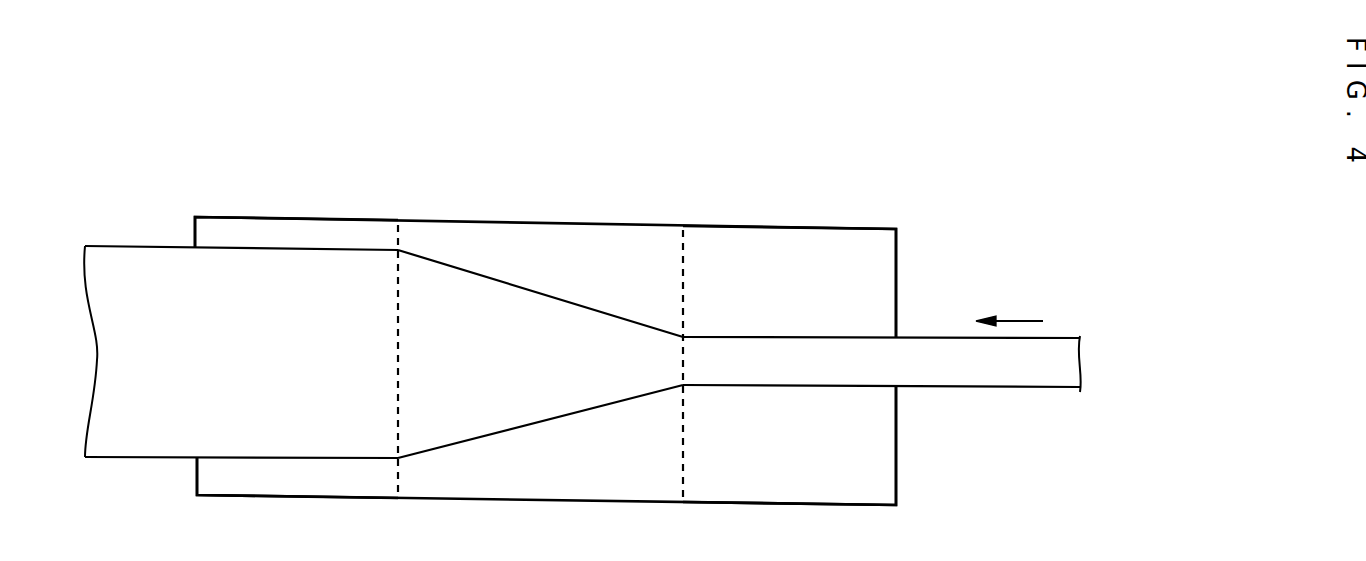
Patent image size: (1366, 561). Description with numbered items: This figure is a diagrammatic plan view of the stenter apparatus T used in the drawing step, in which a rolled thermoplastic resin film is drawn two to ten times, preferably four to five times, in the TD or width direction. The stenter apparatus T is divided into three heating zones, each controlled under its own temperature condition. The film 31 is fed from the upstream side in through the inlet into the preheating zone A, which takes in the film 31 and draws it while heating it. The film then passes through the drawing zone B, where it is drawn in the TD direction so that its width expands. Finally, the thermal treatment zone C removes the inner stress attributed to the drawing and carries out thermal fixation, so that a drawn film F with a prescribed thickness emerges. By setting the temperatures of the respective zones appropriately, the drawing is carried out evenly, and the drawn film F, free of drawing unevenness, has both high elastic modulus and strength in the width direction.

The film 31 is at (1005, 378).
The stenter apparatus T is at (648, 193).
The preheating zone A is at (840, 250).
The drawing zone B is at (516, 238).
The thermal treatment zone C is at (313, 232).
The drawn film F is at (120, 440).